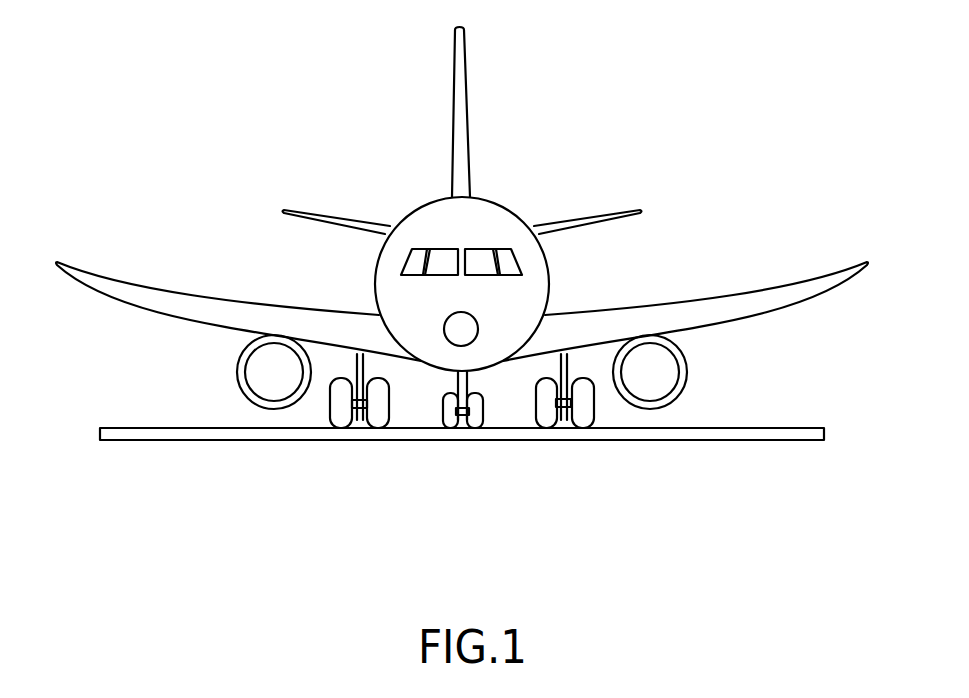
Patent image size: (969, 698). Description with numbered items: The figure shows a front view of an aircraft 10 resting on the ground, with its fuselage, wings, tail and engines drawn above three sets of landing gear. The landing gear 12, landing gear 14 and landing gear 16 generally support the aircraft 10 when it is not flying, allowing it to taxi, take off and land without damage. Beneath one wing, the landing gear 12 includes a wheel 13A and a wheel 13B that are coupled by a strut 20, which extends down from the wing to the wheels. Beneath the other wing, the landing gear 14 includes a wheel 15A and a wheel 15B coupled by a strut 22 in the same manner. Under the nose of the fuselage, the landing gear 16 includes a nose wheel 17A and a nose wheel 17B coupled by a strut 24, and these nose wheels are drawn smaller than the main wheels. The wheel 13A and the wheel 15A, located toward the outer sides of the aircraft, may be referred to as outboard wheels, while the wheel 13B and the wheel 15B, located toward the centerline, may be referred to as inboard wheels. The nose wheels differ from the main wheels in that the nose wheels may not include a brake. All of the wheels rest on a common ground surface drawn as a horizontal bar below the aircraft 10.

The aircraft 10 is at (308, 117).
The landing gear 12 is at (617, 382).
The wheel 13A is at (594, 409).
The wheel 13B is at (487, 393).
The landing gear 14 is at (281, 453).
The wheel 15A is at (330, 419).
The wheel 15B is at (393, 419).
The landing gear 16 is at (505, 402).
The nose wheel 17A is at (484, 418).
The nose wheel 17B is at (443, 422).
The strut 20 is at (563, 408).
The strut 22 is at (360, 408).
The strut 24 is at (459, 416).